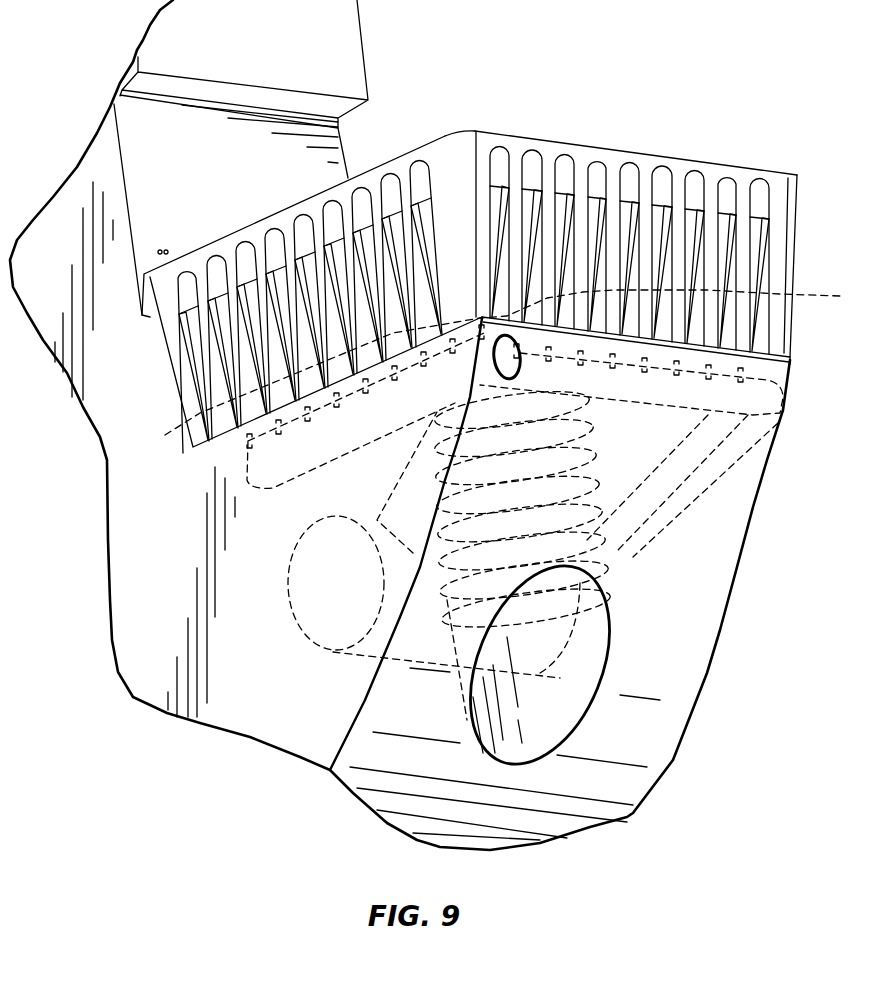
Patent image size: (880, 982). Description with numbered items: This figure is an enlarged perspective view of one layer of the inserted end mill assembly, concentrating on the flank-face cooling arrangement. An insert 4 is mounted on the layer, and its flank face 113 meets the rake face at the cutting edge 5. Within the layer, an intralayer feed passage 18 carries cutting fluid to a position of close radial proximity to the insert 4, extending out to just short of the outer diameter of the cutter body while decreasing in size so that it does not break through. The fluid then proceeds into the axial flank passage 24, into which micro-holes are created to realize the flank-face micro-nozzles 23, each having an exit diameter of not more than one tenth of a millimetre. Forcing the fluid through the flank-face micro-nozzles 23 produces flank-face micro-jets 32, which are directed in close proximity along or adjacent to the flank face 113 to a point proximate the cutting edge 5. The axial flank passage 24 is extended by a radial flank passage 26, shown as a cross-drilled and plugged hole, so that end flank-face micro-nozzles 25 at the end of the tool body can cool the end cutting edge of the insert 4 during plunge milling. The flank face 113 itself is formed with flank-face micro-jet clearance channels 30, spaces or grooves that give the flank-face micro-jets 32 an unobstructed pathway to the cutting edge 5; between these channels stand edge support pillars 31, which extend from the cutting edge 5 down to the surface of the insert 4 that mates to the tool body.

The insert 4 is at (757, 152).
The cutting edge 5 is at (490, 132).
The intralayer feed passage 18 is at (660, 410).
The flank-face micro-nozzle 23 is at (521, 361).
The axial flank passage 24 is at (660, 393).
The end flank-face micro-nozzle 25 is at (306, 406).
The radial flank passage 26 is at (273, 490).
The flank-face micro-jet clearance channel 30 is at (343, 197).
The edge support pillar 31 is at (287, 337).
The flank-face micro-jet 32 is at (227, 305).
The flank face 113 is at (780, 178).